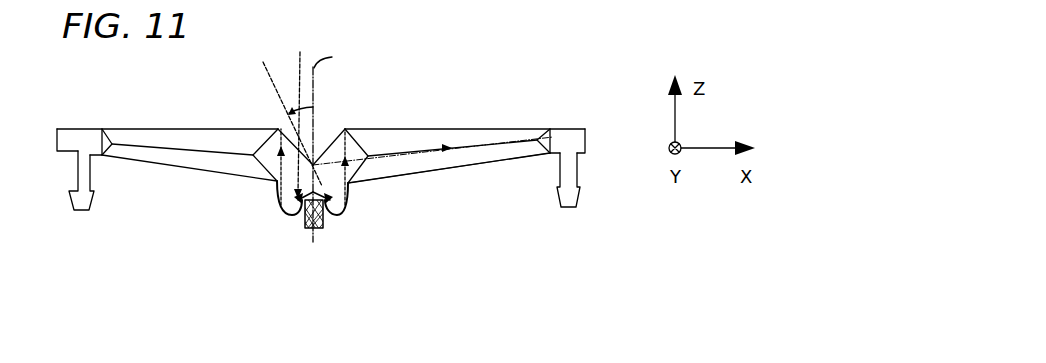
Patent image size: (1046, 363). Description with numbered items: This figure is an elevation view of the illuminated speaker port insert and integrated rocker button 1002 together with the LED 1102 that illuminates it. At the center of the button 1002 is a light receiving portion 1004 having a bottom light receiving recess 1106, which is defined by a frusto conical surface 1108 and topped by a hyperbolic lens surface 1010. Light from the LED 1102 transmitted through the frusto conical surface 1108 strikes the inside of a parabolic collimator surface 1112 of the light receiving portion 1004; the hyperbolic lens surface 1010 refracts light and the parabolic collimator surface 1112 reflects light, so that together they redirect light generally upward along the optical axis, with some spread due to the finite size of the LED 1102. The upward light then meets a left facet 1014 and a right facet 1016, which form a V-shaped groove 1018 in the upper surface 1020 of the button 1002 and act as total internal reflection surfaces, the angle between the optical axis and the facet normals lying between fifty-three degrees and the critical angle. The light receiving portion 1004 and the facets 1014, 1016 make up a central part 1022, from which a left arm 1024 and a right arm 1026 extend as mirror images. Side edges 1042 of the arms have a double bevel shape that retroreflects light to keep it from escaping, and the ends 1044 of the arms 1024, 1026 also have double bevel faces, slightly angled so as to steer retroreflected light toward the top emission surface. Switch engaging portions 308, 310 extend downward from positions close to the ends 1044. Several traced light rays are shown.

The illuminated speaker port insert and integrated rocker button 1002 is at (330, 183).
The light receiving portion 1004 is at (352, 212).
The hyperbolic lens surface 1010 is at (315, 134).
The left facet 1014 is at (292, 134).
The right facet 1016 is at (337, 127).
The V-shaped groove 1018 is at (332, 131).
The upper surface 1020 is at (490, 123).
The central part 1022 is at (292, 177).
The left arm 1024 is at (120, 128).
The right arm 1026 is at (541, 128).
The side edges 1042 is at (521, 150).
The ends 1044 is at (59, 141).
The LED 1102 is at (303, 224).
The bottom light receiving recess 1106 is at (290, 217).
The frusto conical surface 1108 is at (327, 227).
The parabolic collimator surface 1112 is at (348, 192).
The switch engaging portion 308 is at (80, 172).
The switch engaging portion 310 is at (571, 175).